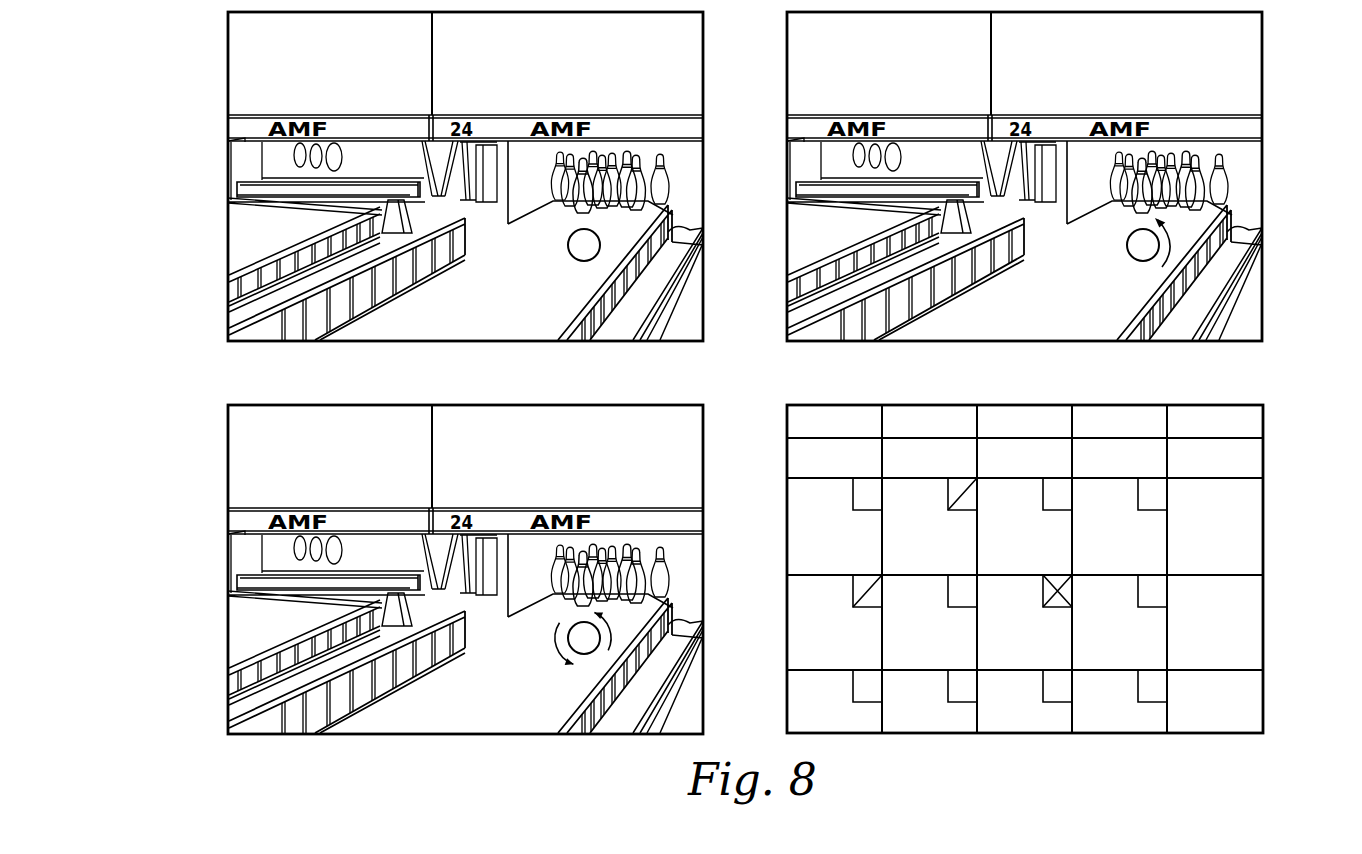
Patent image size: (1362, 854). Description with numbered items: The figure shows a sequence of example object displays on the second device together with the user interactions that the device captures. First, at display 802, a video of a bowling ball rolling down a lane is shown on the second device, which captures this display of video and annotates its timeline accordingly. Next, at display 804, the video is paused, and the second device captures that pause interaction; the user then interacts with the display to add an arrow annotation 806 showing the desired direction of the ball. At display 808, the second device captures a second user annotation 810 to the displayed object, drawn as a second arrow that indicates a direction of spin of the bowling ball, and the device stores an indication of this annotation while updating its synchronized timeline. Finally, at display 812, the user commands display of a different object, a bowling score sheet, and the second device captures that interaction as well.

The video display of bowling ball rolling down a lane 802 is at (228, 93).
The paused video display 804 is at (1263, 92).
The arrow annotation 806 is at (1226, 227).
The second annotation display 808 is at (228, 487).
The second user annotation 810 is at (557, 640).
The bowling score sheet display 812 is at (1263, 537).